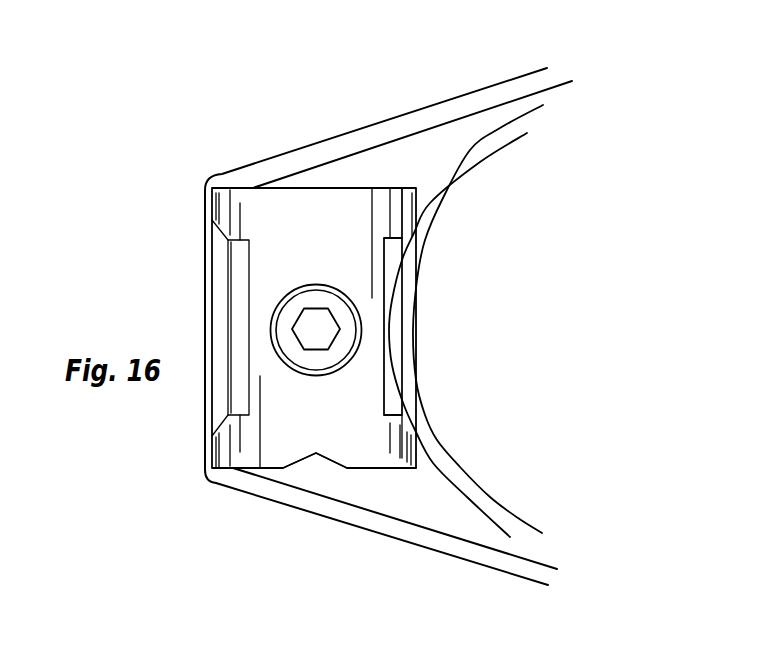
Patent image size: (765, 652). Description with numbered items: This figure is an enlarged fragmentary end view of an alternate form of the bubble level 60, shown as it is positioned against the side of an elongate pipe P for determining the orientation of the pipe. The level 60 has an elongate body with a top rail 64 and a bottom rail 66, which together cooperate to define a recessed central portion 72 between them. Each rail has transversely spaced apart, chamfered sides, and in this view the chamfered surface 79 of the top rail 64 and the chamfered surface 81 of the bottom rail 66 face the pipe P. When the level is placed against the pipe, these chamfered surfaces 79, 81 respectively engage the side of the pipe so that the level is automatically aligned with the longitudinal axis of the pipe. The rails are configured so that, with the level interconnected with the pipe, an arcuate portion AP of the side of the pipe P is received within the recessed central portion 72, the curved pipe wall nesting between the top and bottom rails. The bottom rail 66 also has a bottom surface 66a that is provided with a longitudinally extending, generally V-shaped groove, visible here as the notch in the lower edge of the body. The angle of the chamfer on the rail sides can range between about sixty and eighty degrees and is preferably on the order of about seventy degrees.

The bubble level 60 is at (292, 188).
The top rail 64 is at (380, 200).
The bottom rail 66 is at (375, 472).
The bottom surface 66a is at (325, 462).
The recessed central portion 72 is at (384, 383).
The chamfered surface 79 is at (408, 230).
The chamfered surface 81 is at (410, 422).
The pipe P is at (473, 162).
The arcuate portion AP is at (407, 305).